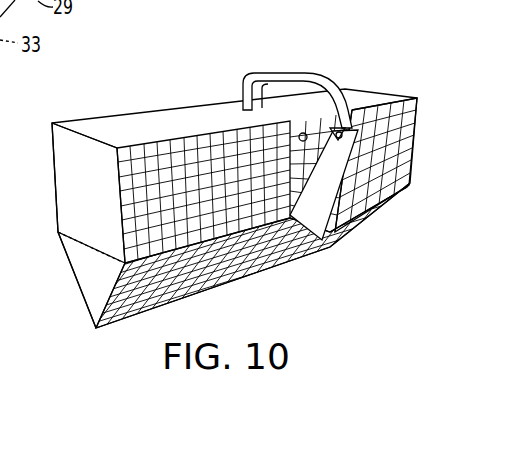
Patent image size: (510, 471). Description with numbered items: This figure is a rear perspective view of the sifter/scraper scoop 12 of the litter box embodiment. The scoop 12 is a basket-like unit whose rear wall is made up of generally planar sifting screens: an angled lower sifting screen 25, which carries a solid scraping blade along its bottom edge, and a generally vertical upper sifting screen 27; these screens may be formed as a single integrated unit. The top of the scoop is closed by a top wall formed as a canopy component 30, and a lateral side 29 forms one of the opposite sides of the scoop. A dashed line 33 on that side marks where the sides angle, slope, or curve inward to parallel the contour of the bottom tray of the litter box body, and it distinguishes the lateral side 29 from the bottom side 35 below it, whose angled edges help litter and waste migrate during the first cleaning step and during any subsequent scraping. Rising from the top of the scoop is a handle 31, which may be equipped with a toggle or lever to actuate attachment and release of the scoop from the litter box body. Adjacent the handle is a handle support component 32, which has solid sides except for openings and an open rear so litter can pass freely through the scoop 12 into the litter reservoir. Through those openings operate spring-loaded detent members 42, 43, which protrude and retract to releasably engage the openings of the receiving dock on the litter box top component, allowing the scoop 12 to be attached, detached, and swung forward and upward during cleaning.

The sifter/scraper scoop 12 is at (190, 86).
The lower sifting screen 25 is at (195, 292).
The upper sifting screen 27 is at (412, 125).
The lateral side 29 is at (60, 184).
The canopy component 30 is at (91, 126).
The handle 31 is at (306, 80).
The handle support component 32 is at (298, 222).
The dashed line 33 is at (60, 240).
The bottom side 35 is at (80, 282).
The detent member 42 is at (348, 115).
The detent member 43 is at (301, 132).